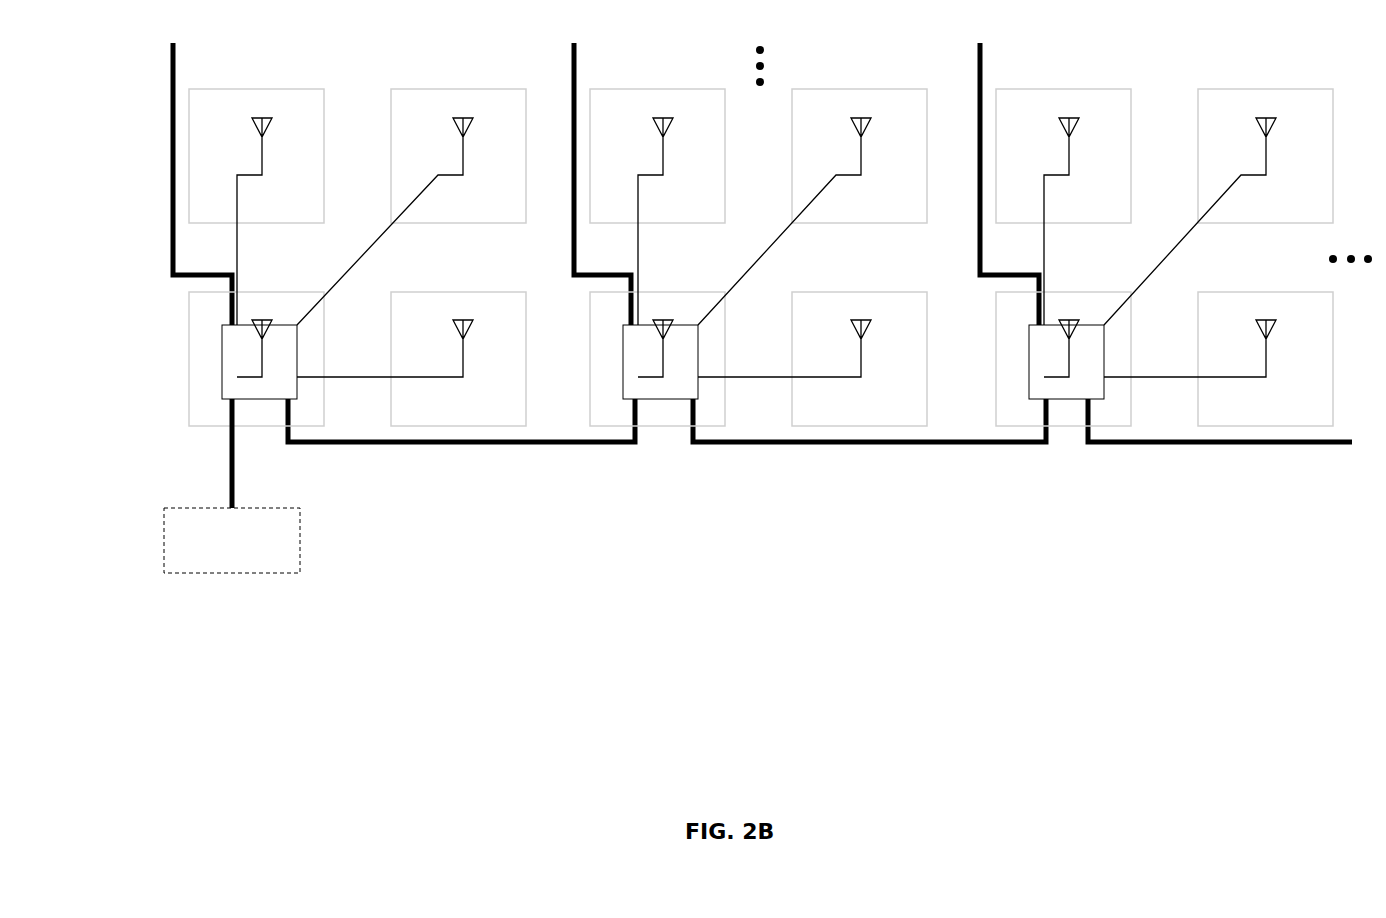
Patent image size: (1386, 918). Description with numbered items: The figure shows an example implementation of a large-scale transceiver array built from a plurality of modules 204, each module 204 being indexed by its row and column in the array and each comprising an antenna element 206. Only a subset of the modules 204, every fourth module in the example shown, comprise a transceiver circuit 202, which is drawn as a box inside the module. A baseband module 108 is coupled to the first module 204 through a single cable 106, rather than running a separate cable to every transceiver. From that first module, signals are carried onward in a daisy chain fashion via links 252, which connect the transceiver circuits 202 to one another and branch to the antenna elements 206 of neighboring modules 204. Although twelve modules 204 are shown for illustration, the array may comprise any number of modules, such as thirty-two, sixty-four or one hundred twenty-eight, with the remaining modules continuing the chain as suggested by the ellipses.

The cable 106 is at (232, 472).
The baseband module 108 is at (200, 508).
The transceiver circuit 202 is at (222, 399).
The module 204 is at (241, 89).
The antenna element 206 is at (284, 111).
The link 252 is at (173, 160).